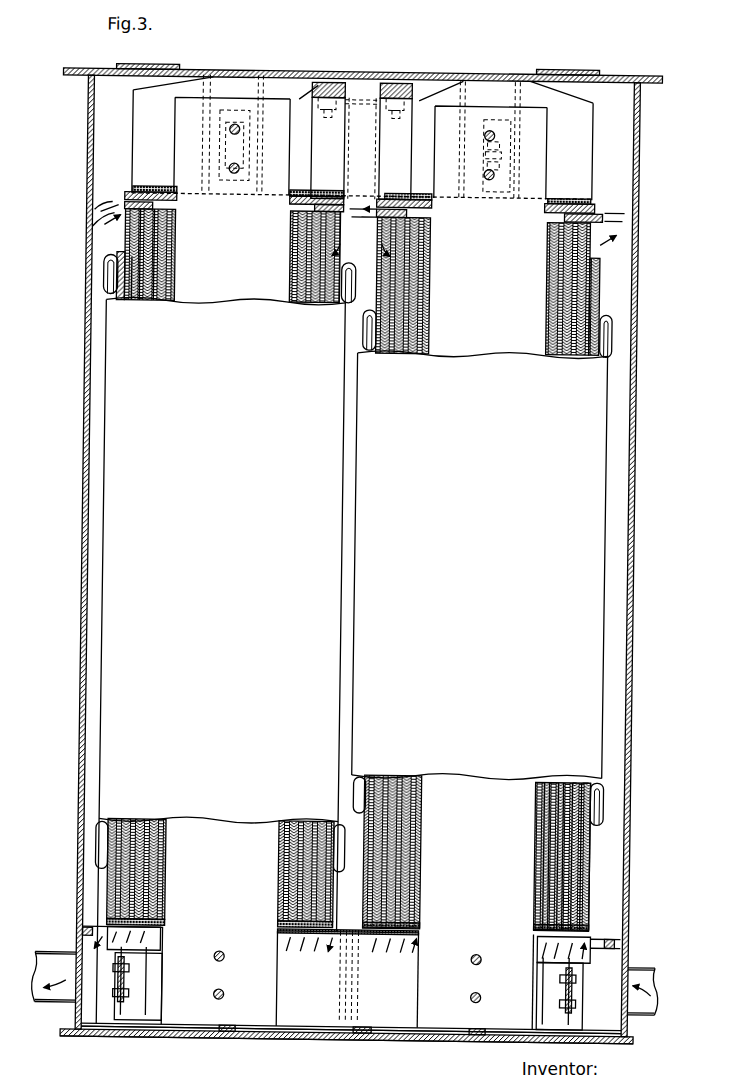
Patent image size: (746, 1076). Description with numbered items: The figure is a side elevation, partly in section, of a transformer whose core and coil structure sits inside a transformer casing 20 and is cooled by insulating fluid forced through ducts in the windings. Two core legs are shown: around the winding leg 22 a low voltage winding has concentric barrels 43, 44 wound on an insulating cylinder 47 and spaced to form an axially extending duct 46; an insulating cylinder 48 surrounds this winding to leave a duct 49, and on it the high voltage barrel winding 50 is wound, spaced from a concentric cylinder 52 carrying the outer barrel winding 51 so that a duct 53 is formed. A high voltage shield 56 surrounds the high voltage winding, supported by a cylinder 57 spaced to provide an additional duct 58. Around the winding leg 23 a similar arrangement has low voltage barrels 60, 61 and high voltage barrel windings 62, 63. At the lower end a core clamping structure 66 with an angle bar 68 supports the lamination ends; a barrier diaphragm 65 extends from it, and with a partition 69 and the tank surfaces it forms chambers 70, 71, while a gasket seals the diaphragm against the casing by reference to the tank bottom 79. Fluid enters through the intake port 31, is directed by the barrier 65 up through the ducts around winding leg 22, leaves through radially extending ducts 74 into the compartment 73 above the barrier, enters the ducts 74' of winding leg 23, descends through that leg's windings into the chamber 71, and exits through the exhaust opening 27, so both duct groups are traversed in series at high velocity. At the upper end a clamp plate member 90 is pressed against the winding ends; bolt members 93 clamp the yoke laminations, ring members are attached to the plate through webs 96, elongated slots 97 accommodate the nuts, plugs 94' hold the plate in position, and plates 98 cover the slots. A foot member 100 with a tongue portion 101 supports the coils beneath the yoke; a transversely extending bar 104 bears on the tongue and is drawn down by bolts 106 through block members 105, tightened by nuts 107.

The transformer casing 20 is at (82, 372).
The winding leg 22 is at (450, 907).
The winding leg 23 is at (208, 899).
The exhaust opening 27 is at (60, 955).
The intake port 31 is at (648, 964).
The concentric barrel winding 43 is at (542, 796).
The concentric barrel winding 44 is at (549, 808).
The axially extending duct 46 is at (552, 880).
The insulating cylinder 47 is at (425, 807).
The insulating cylinder 48 is at (554, 778).
The duct 49 is at (560, 898).
The high voltage barrel winding 50 is at (578, 778).
The high voltage barrel winding 51 is at (590, 778).
The concentric cylinder 52 is at (578, 826).
The duct 53 is at (566, 912).
The high voltage shield 56 is at (607, 795).
The cylinder 57 is at (597, 862).
The axially extending duct 58 is at (585, 890).
The low voltage barrel winding 60 is at (163, 248).
The low voltage barrel winding 61 is at (158, 270).
The high voltage barrel winding 62 is at (140, 284).
The high voltage barrel winding 63 is at (125, 294).
The barrier diaphragm 65 is at (600, 934).
The core clamping structure 66 is at (296, 995).
The angle bar 68 is at (322, 1030).
The partition 69 is at (362, 985).
The chamber 70 is at (594, 1026).
The chamber 71 is at (88, 1018).
The passage or compartment 73 is at (596, 164).
The radially extending duct 74 is at (493, 223).
The radially extending duct 74' is at (234, 213).
The tank bottom 79 is at (392, 1040).
The clamp plate member 90 is at (585, 100).
The bolt member 93 is at (484, 129).
The plug 94' is at (513, 184).
The web 96 is at (455, 197).
The elongated slot 97 is at (497, 128).
The plate 98 is at (472, 131).
The foot member 100 is at (396, 198).
The tongue portion 101 is at (388, 160).
The transversely extending bar 104 is at (374, 90).
The block member 105 is at (385, 108).
The bolt 106 is at (383, 120).
The nut 107 is at (392, 125).